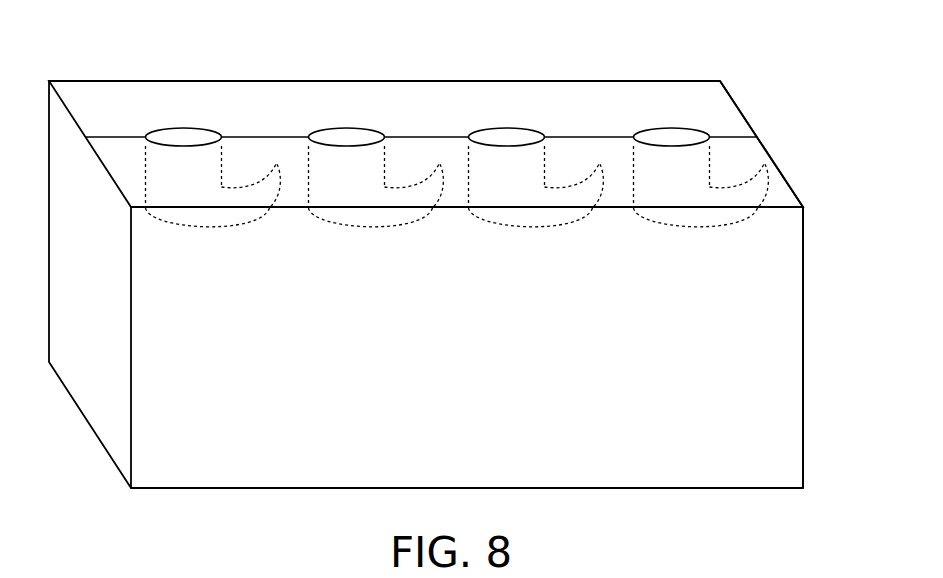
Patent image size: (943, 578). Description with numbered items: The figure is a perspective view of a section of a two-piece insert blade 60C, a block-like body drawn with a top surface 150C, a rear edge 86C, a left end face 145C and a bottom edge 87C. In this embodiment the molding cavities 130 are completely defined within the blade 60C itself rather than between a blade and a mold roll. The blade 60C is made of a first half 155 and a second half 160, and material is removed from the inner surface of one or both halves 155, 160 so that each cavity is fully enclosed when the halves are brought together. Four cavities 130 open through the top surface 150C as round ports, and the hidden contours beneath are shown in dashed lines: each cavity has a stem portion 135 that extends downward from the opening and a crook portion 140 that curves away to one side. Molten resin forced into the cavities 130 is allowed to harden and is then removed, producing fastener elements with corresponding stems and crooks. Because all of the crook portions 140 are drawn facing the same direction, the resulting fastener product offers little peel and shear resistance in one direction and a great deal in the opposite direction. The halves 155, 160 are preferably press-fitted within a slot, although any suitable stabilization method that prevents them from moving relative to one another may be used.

The blade 60C is at (698, 435).
The top surface 150C is at (147, 82).
The rear edge of block 86C is at (630, 97).
The first half 155 is at (722, 110).
The second half 160 is at (740, 152).
The left side surface 145C is at (192, 450).
The bottom edge 87C is at (568, 487).
The molding cavities 130 is at (183, 133).
The stem portion 135 is at (178, 177).
The crook portion 140 is at (228, 218).